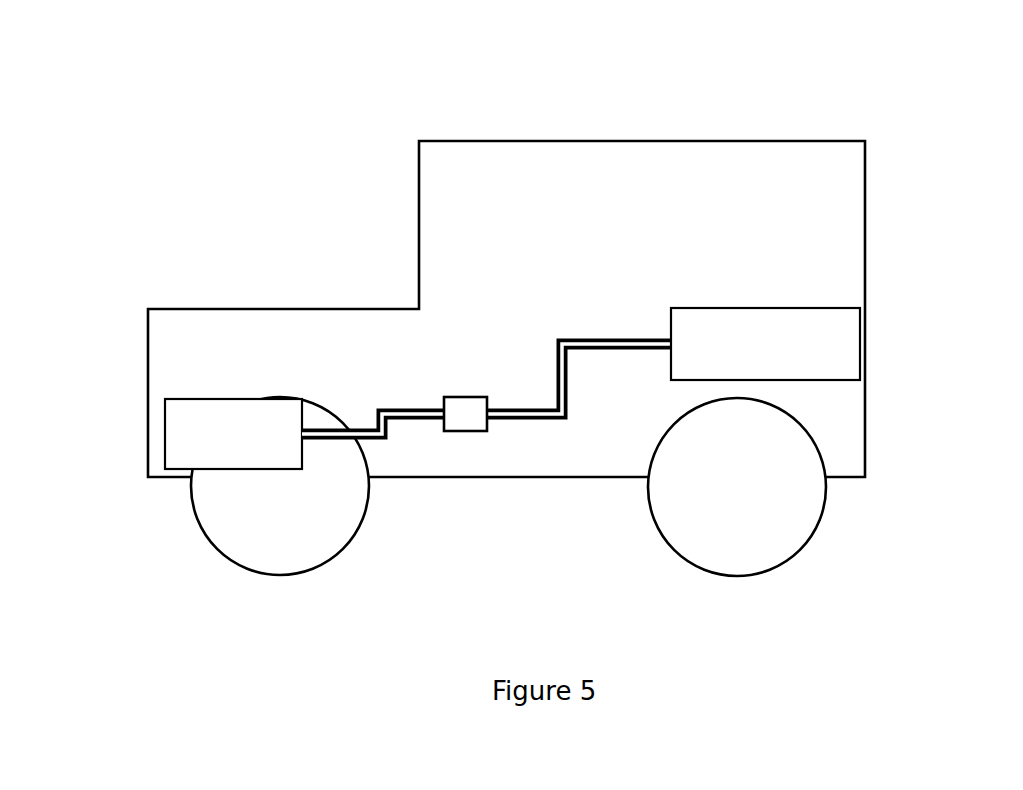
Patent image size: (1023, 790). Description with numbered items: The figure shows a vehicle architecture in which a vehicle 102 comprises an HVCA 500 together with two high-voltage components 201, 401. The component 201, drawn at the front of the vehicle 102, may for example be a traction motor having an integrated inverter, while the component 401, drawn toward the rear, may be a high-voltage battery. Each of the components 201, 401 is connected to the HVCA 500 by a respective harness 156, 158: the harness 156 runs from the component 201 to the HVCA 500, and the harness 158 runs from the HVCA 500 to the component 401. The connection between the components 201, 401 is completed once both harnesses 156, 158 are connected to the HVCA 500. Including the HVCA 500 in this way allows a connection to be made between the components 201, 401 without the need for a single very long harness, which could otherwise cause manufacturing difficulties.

The vehicle 102 is at (597, 182).
The harness 156 is at (397, 407).
The harness 158 is at (588, 337).
The high-voltage component 201 is at (192, 458).
The high-voltage component 401 is at (807, 345).
The HVCA 500 is at (462, 422).